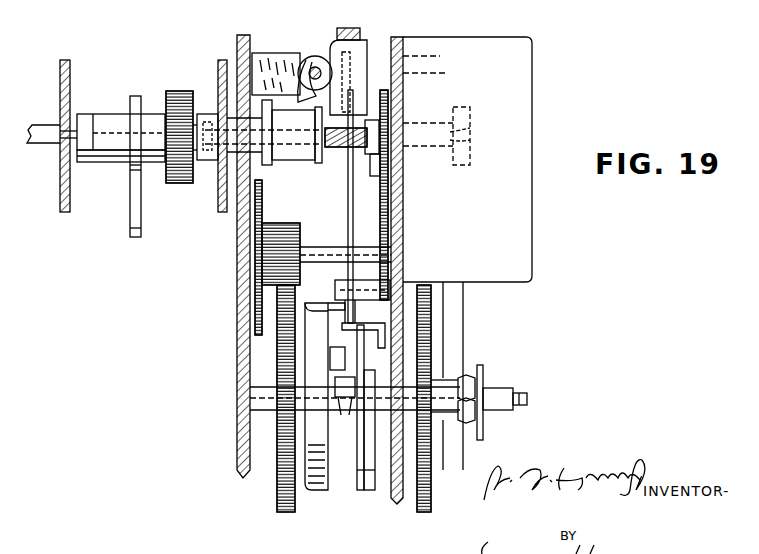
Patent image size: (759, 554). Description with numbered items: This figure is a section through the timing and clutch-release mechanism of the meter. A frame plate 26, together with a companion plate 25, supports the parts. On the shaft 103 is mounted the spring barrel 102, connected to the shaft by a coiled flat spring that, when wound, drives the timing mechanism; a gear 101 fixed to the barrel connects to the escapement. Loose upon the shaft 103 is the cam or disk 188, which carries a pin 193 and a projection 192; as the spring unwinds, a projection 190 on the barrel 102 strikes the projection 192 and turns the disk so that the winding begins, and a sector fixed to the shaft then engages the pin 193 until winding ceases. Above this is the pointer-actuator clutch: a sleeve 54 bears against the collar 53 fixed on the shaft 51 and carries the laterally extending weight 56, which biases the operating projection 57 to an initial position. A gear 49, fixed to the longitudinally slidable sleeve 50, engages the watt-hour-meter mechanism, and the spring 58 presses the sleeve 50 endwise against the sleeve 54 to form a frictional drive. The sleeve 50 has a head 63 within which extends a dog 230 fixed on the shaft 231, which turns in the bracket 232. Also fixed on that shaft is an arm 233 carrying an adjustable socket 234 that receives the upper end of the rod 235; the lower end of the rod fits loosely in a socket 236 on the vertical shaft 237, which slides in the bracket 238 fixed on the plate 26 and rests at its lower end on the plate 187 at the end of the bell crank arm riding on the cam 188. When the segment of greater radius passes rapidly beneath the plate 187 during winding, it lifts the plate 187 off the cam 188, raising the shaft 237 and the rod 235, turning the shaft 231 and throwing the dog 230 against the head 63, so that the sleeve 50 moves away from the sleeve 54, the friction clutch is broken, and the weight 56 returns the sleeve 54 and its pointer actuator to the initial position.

The frame plate 25 is at (237, 296).
The plate 26 is at (397, 505).
The gear 49 is at (175, 183).
The sleeve 50 is at (210, 115).
The shaft 51 is at (298, 161).
The collar 53 is at (86, 162).
The sleeve 54 is at (106, 120).
The weight 56 is at (130, 222).
The operating projection 57 is at (35, 126).
The spring 58 is at (337, 148).
The head 63 is at (288, 243).
The gear 101 is at (277, 350).
The barrel 102 is at (303, 470).
The shaft 103 is at (257, 398).
The plate 187 is at (385, 324).
The cam 188 is at (357, 335).
The projection 190 is at (334, 361).
The projection 192 is at (343, 399).
The pin 193 is at (388, 386).
The dog 230 is at (300, 80).
The shaft 231 is at (315, 66).
The bracket 232 is at (265, 53).
The arm 233 is at (362, 48).
The adjustable socket 234 is at (437, 57).
The rod 235 is at (443, 74).
The socket 236 is at (375, 107).
The vertical shaft 237 is at (347, 208).
The bracket 238 is at (338, 292).